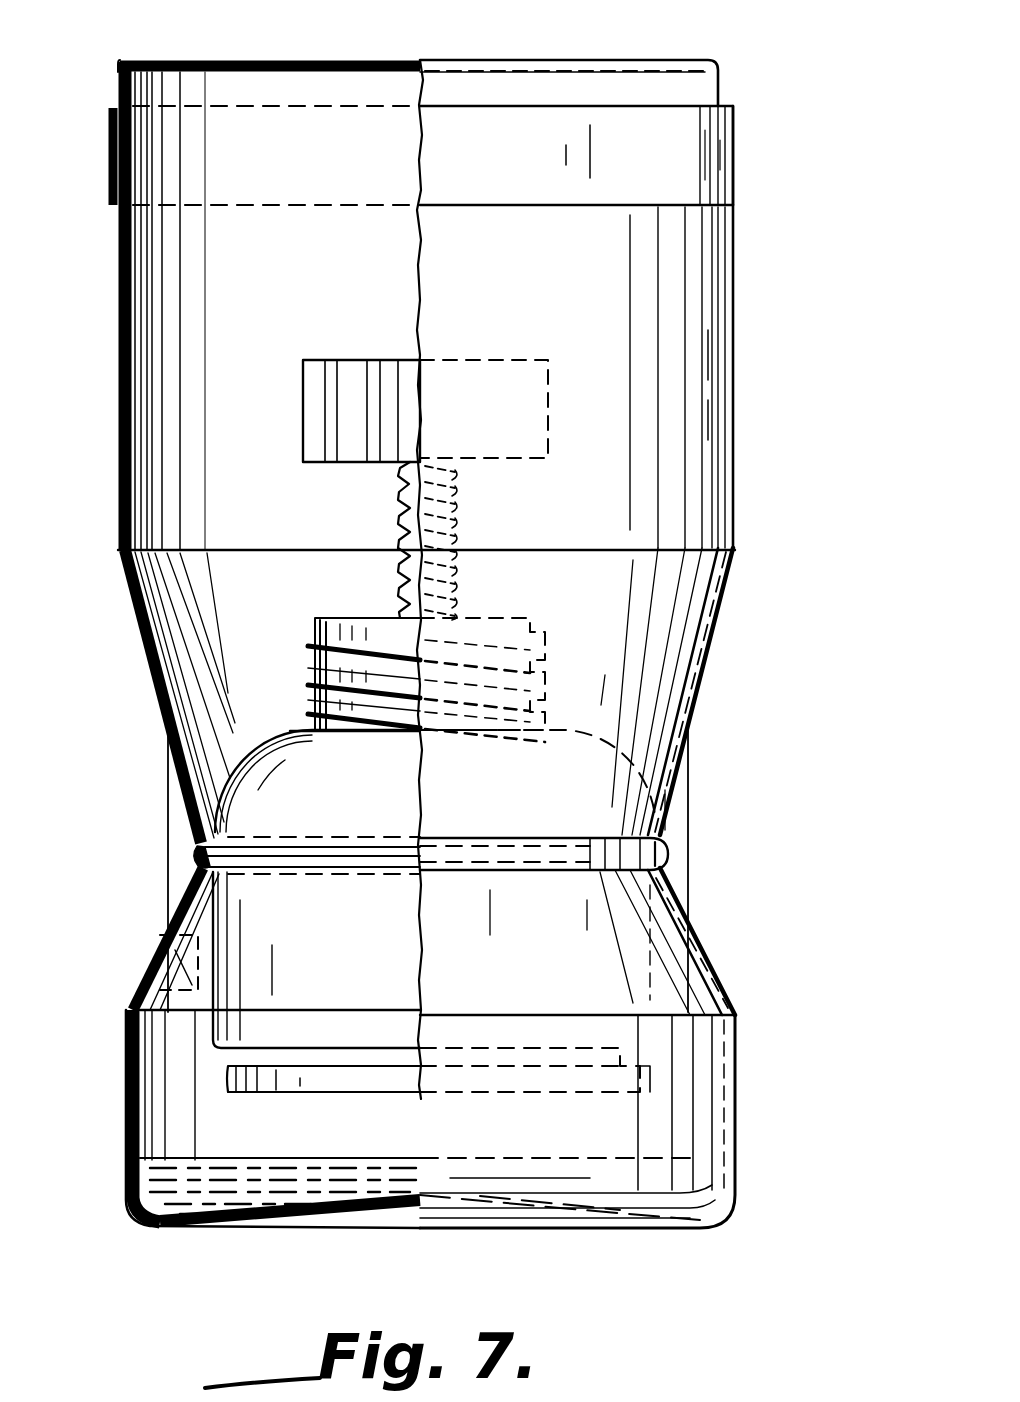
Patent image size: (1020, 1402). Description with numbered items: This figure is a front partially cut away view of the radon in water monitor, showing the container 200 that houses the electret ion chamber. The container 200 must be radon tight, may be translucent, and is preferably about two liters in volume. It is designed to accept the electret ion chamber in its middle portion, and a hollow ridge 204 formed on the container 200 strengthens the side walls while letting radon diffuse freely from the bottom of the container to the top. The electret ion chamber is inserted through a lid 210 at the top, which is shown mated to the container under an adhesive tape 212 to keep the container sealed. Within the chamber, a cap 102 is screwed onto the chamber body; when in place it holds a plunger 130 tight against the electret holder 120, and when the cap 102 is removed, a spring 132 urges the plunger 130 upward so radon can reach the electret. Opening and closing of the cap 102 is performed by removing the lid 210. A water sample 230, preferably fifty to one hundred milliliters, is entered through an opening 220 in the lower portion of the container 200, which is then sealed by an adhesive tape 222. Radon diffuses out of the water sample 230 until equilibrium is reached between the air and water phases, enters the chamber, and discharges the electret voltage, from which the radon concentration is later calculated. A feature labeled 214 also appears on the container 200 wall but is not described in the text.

The cap 102 is at (303, 405).
The electret holder 120 is at (228, 1112).
The plunger 130 is at (400, 566).
The spring 132 is at (397, 496).
The container 200 is at (760, 432).
The hollow ridge 204 is at (197, 856).
The lid 210 is at (720, 80).
The adhesive tape 212 is at (733, 128).
The container side wall outline 214 is at (168, 800).
The opening 220 is at (165, 950).
The adhesive tape 222 is at (145, 970).
The water sample 230 is at (164, 1238).